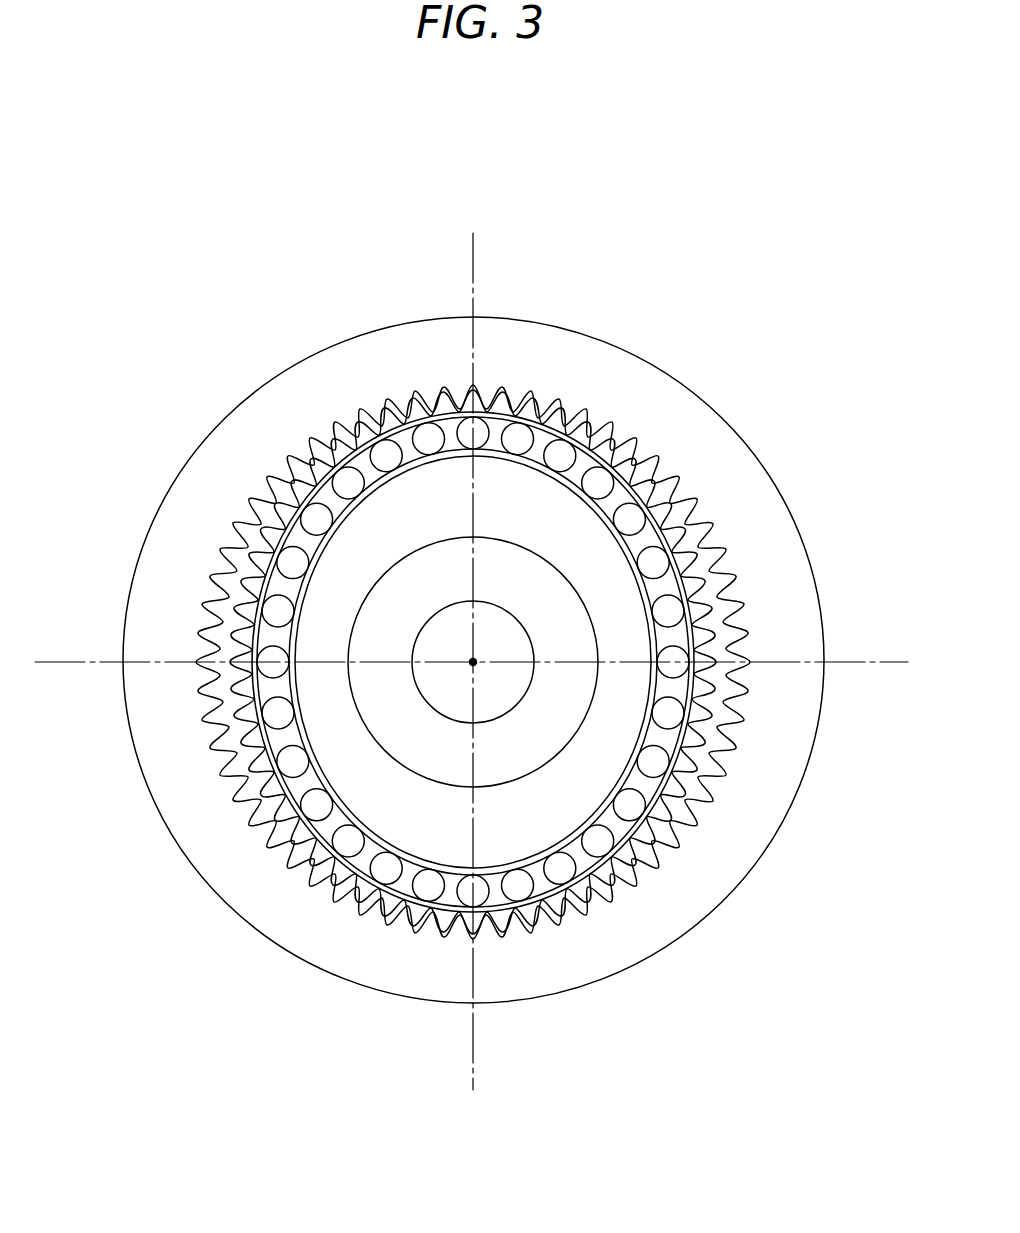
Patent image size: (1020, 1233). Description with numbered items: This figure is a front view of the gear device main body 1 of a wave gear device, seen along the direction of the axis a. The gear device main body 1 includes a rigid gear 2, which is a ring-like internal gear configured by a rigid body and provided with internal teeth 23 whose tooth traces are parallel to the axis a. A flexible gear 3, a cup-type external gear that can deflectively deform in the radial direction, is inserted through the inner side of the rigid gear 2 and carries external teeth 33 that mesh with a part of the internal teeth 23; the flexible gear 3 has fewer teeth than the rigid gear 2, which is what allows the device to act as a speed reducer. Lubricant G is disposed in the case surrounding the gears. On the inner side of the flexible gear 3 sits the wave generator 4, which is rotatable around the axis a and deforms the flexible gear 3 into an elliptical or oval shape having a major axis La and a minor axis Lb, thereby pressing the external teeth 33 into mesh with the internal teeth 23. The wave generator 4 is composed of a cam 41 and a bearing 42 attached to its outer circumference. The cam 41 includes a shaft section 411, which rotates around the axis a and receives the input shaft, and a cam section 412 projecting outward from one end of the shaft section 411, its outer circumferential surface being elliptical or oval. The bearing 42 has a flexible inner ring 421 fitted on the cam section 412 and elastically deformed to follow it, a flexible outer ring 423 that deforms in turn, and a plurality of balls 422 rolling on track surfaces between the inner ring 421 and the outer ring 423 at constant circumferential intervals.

The gear device main body 1 is at (715, 183).
The rigid gear 2 is at (682, 375).
The internal teeth 23 is at (732, 742).
The flexible gear 3 is at (722, 626).
The external teeth 33 is at (707, 778).
The lubricant G is at (630, 442).
The wave generator 4 is at (364, 907).
The cam 41 is at (84, 834).
The shaft section 411 is at (385, 745).
The cam section 412 is at (387, 802).
The bearing 42 is at (734, 991).
The inner ring 421 is at (608, 882).
The balls 422 is at (566, 873).
The outer ring 423 is at (546, 905).
The axis a is at (473, 662).
The major axis La is at (474, 280).
The minor axis Lb is at (875, 664).